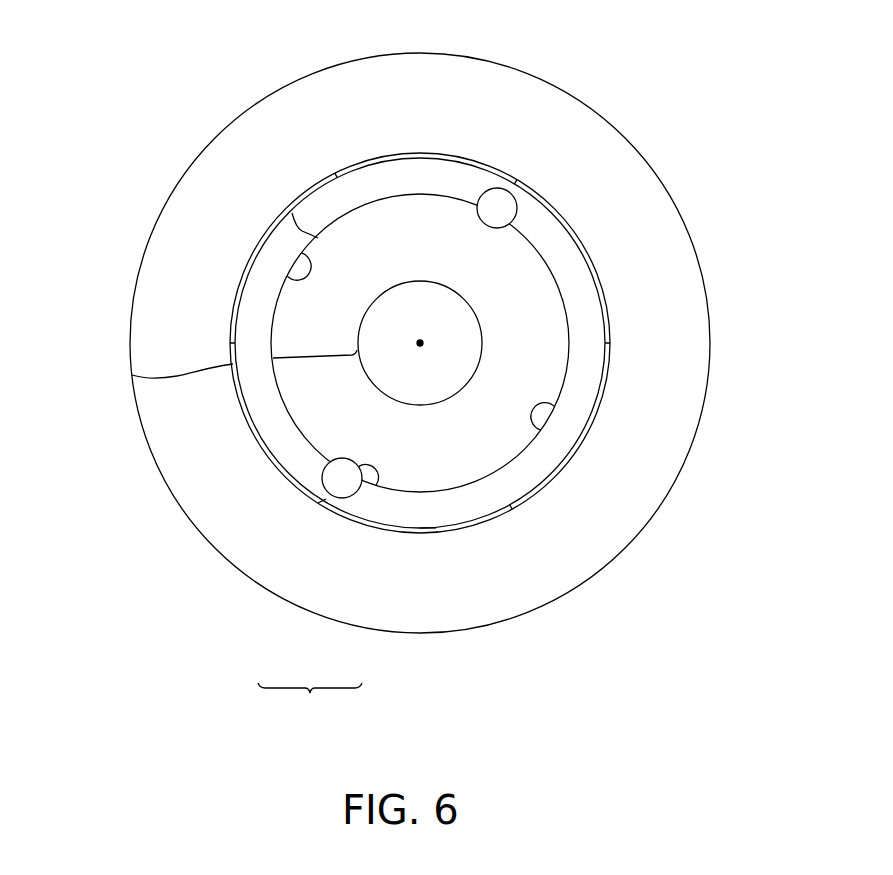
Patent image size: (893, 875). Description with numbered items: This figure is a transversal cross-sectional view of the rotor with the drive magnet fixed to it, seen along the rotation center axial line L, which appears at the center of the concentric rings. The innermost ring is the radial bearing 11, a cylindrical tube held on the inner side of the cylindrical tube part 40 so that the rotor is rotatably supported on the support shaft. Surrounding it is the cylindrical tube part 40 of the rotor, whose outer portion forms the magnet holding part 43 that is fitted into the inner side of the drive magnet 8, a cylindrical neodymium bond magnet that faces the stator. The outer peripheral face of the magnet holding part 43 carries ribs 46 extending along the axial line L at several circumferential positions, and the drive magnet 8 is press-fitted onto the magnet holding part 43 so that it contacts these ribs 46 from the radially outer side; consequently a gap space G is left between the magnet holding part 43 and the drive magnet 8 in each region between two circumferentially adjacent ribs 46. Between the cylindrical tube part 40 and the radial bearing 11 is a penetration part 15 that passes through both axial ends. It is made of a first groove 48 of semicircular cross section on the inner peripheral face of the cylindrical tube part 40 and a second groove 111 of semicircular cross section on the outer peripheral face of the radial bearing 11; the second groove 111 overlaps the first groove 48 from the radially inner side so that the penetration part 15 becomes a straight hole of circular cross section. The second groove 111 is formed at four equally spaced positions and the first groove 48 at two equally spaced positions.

The drive magnet 8 is at (178, 378).
The gap space G is at (568, 222).
The radial bearing 11 is at (310, 403).
The rotation center axial line L is at (420, 343).
The magnet holding part 43 is at (300, 233).
The cylindrical tube part 40 is at (428, 530).
The second groove 111 is at (302, 255).
The rib 46 is at (517, 180).
The first groove 48 is at (320, 502).
The penetration part 15 is at (310, 703).